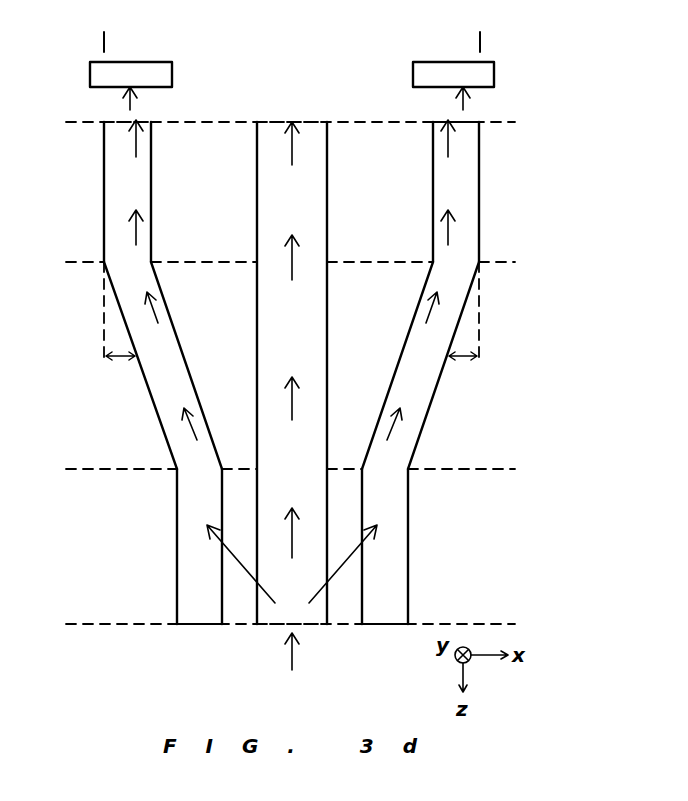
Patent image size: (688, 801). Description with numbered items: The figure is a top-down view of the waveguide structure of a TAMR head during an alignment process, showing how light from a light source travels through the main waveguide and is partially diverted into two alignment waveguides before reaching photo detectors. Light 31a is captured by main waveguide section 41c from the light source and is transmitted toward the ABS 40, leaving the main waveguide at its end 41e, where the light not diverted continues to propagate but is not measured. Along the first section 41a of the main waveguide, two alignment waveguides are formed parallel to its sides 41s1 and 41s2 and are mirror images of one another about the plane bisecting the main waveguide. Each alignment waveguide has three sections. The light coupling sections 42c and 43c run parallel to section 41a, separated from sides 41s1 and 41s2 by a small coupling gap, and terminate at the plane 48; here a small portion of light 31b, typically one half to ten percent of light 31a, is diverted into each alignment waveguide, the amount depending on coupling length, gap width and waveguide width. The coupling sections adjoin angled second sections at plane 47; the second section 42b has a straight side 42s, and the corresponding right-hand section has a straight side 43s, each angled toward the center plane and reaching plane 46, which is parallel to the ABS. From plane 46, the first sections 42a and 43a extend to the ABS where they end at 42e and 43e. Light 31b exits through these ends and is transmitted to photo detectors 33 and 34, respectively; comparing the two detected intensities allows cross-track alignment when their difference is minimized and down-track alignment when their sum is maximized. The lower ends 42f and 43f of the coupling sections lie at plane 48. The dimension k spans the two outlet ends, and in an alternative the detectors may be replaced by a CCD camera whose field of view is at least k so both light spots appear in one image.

The field of view dimension k is at (468, 49).
The photo detector 33 is at (100, 73).
The photo detector 34 is at (483, 72).
The ABS 40 is at (290, 122).
The plane 46 is at (290, 306).
The plane 47 is at (290, 469).
The plane 48 is at (290, 625).
The light 31a is at (293, 150).
The light 31b is at (128, 103).
The first section of main waveguide 41a is at (295, 356).
The side of first section 41s1 is at (255, 333).
The side of first section 41s2 is at (328, 333).
The end of main waveguide 41e is at (270, 119).
The main waveguide section 41c is at (283, 614).
The first section of AWVG 42 42a is at (120, 183).
The second section of AWVG 42 42b is at (152, 365).
The straight side of section 42b 42s is at (147, 393).
The light coupling section of AWVG 42 42c is at (180, 558).
The end of section 42a 42e is at (133, 126).
The inlet end of left lateral channel 42f is at (185, 624).
The first section of AWVG 43 43a is at (465, 172).
The straight side of section 43b 43s is at (438, 393).
The light coupling section of AWVG 43 43c is at (398, 560).
The end of section 43a 43e is at (437, 124).
The inlet end of right lateral channel 43f is at (390, 624).